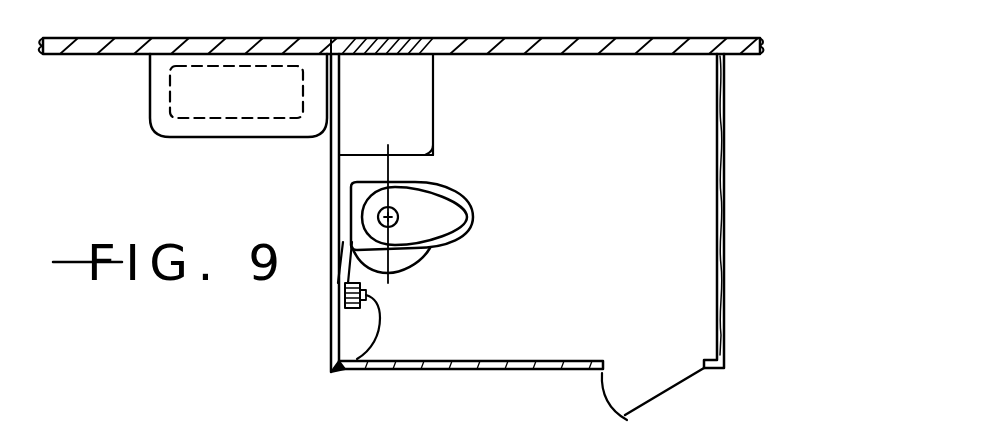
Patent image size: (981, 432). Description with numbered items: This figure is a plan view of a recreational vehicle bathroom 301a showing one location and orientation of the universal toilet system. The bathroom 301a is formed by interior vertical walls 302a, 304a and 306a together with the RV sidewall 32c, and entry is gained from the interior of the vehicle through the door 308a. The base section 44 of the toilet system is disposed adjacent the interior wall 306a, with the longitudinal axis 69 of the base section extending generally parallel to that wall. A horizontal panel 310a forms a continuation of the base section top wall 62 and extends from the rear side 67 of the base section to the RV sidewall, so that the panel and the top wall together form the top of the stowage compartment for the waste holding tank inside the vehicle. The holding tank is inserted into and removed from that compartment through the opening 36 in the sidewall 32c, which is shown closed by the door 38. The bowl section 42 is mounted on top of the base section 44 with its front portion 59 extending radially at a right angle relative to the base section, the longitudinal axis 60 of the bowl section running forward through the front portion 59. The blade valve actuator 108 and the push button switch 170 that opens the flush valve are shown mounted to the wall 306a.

The RV sidewall 32c is at (572, 34).
The opening 36 is at (353, 40).
The door 38 is at (387, 34).
The bathroom 301a is at (675, 128).
The interior vertical wall 302a is at (727, 233).
The interior vertical wall 304a is at (482, 372).
The interior vertical wall 306a is at (497, 217).
The door 308a is at (668, 393).
The horizontal panel 310a is at (400, 96).
The top wall 62 is at (420, 167).
The rear 67 is at (413, 153).
The front portion 59 is at (470, 205).
The longitudinal axis 60 is at (490, 220).
The bowl section 42 is at (458, 236).
The base section 44 is at (426, 258).
The longitudinal axis 69 is at (388, 283).
The blade valve actuator 108 is at (340, 334).
The push button electrical switch 170 is at (338, 369).